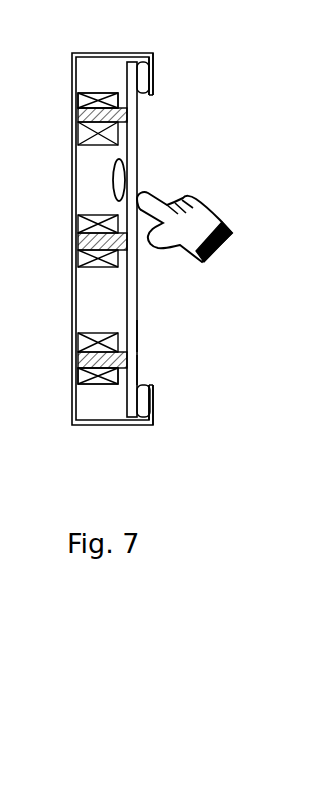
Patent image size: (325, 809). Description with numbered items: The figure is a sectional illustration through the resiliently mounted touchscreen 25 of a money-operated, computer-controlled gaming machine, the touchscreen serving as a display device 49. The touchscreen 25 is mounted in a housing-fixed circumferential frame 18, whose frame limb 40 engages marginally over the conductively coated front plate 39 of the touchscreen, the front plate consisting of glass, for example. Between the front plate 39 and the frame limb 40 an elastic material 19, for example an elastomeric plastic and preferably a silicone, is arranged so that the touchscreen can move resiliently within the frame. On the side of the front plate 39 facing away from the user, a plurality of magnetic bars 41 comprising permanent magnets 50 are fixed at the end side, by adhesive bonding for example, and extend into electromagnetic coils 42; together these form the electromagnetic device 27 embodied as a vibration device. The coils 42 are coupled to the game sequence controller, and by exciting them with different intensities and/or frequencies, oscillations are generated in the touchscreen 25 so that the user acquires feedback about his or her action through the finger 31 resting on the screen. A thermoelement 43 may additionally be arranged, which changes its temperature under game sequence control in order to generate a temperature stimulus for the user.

The circumferential frame 18 is at (83, 52).
The elastic material 19 is at (138, 80).
The touchscreen 25 is at (137, 315).
The electromagnetic device 27 is at (100, 80).
The finger 31 is at (151, 194).
The front plate 39 is at (139, 337).
The frame limb 40 is at (152, 62).
The magnetic bars 41 is at (113, 117).
The electromagnetic coils 42 is at (95, 385).
The thermoelement 43 is at (122, 166).
The display device 49 is at (147, 364).
The permanent magnets 50 is at (86, 112).